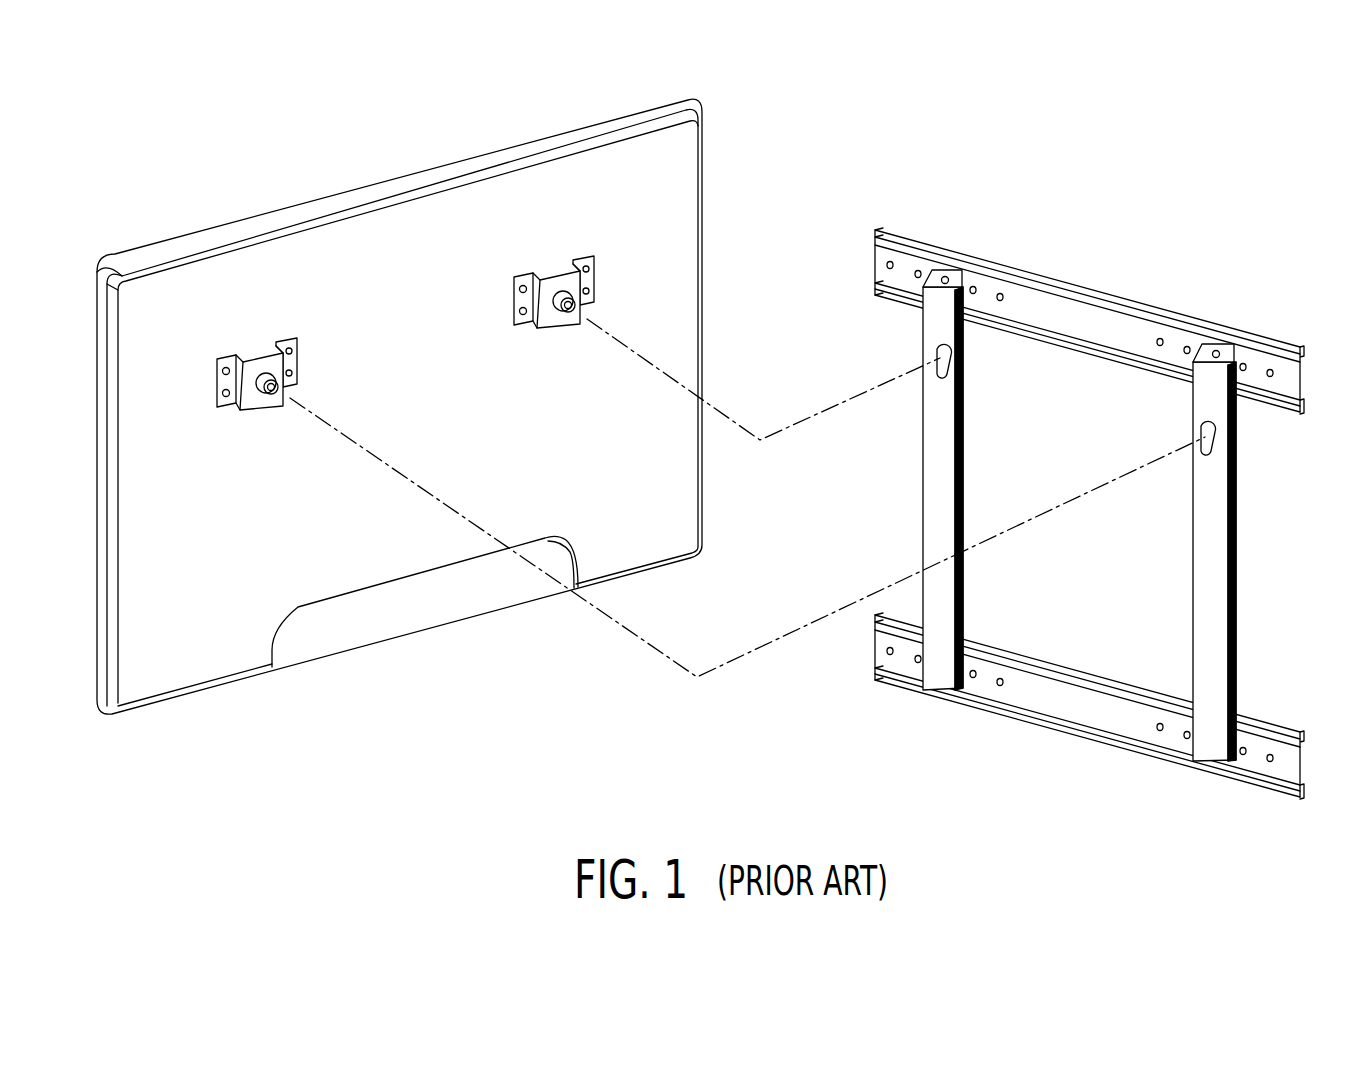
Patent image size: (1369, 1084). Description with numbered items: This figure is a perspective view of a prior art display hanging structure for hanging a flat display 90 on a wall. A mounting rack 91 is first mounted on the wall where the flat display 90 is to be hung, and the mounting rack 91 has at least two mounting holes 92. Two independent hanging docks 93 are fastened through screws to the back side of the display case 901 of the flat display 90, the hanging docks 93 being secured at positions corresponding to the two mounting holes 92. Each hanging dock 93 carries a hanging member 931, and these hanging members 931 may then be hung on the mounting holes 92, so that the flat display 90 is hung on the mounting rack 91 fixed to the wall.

The flat display 90 is at (180, 181).
The display case 901 is at (668, 227).
The mounting rack 91 is at (1078, 248).
The mounting holes 92 is at (940, 356).
The hanging docks 93 is at (254, 362).
The hanging members 931 is at (272, 394).